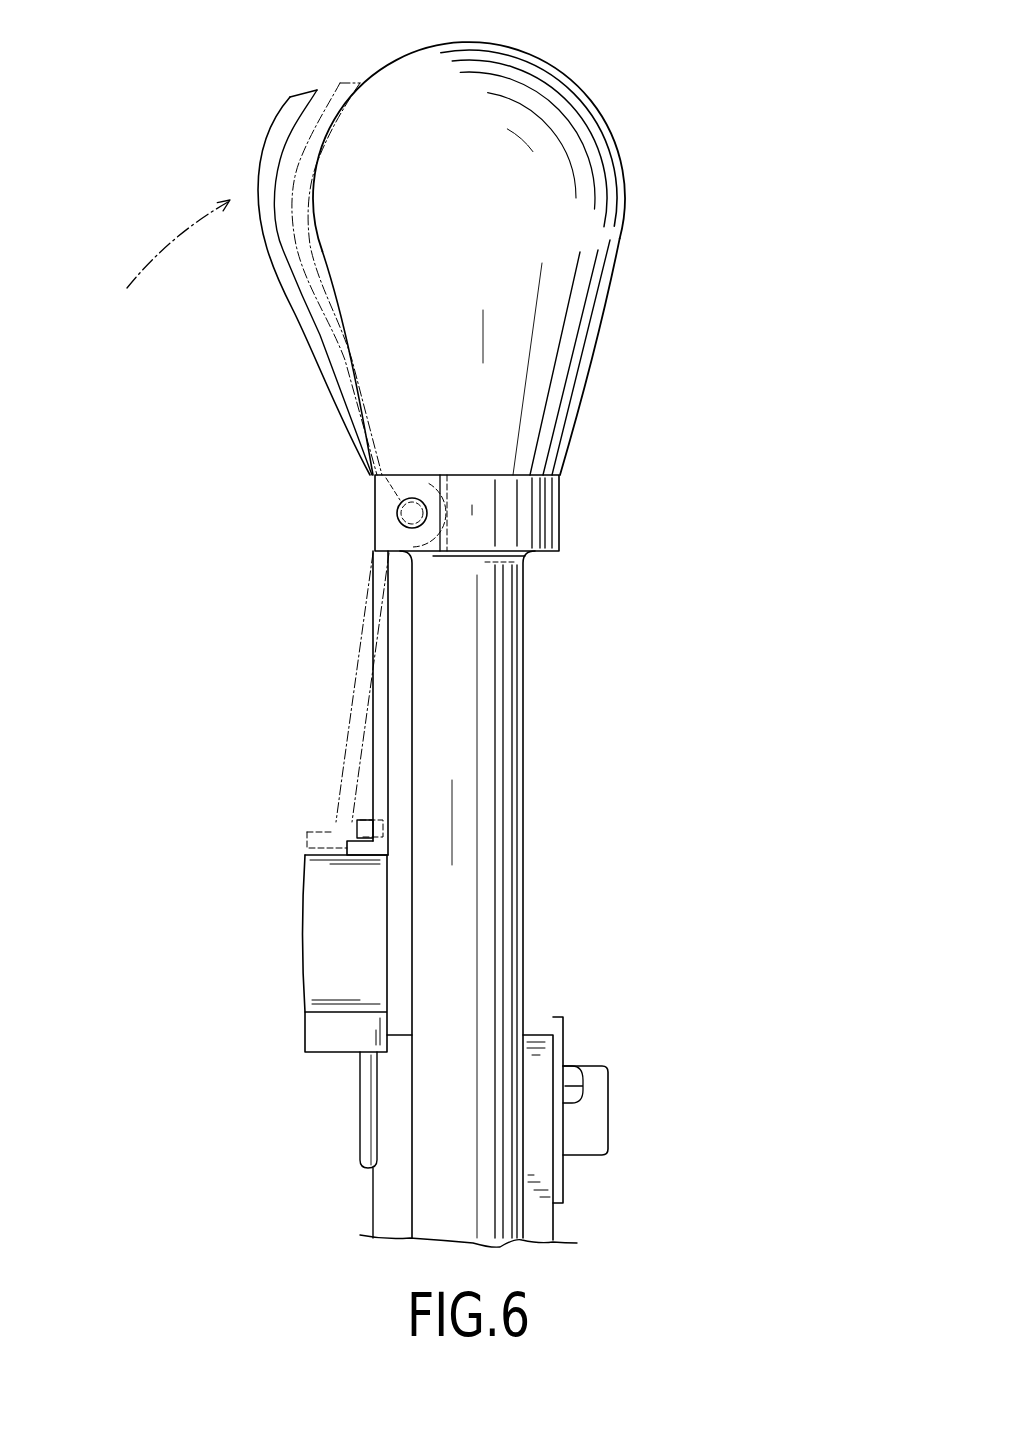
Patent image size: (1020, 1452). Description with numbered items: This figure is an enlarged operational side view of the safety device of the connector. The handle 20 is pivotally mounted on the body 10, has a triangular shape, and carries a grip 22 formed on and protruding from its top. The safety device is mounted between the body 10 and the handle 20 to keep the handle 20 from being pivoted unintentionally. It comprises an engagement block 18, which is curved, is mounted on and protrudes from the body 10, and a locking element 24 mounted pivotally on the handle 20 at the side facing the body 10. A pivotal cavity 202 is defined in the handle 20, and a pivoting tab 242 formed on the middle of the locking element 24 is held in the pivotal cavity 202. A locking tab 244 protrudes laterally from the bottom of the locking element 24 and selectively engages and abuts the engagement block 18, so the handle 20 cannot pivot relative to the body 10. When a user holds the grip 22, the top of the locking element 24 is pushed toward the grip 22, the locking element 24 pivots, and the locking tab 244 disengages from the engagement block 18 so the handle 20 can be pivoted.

The body 10 is at (318, 945).
The engagement block 18 is at (365, 828).
The handle 20 is at (647, 322).
The grip 22 is at (612, 178).
The locking element 24 is at (300, 368).
The pivotal cavity 202 is at (440, 485).
The pivoting tab 242 is at (372, 514).
The locking tab 244 is at (347, 843).